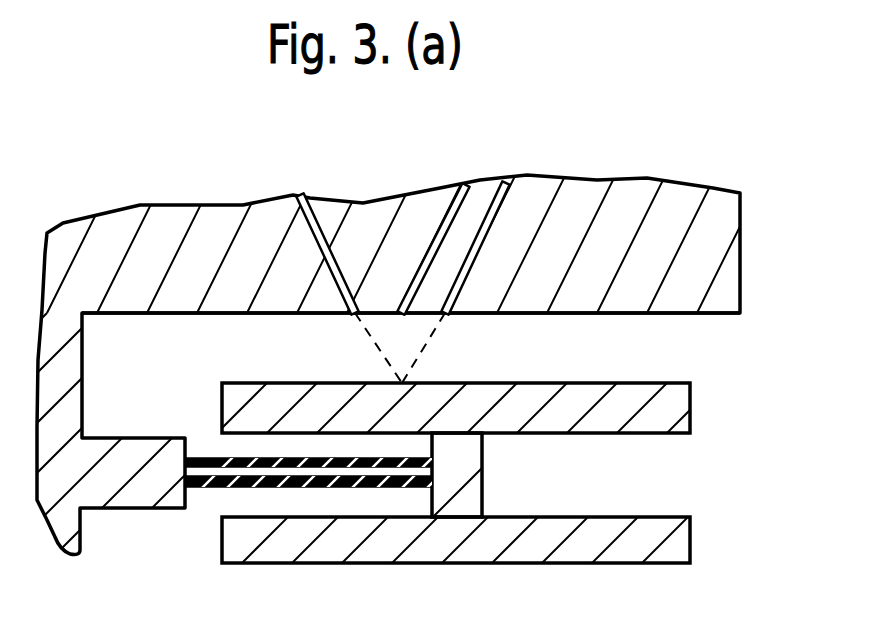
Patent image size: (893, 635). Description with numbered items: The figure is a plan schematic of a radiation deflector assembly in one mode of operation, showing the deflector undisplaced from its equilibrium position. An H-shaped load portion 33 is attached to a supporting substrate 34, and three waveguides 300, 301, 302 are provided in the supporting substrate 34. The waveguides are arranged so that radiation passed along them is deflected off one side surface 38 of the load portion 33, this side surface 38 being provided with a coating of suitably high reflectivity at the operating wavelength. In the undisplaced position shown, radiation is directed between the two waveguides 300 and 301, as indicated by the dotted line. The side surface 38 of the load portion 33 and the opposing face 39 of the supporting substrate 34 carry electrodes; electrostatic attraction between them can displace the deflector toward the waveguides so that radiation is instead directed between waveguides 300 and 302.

The supporting substrate 34 is at (703, 267).
The face of the supporting substrate 39 is at (548, 315).
The side surface of the load portion 38 is at (608, 382).
The H-shaped load portion 33 is at (660, 540).
The waveguide 300 is at (310, 187).
The waveguide 301 is at (500, 197).
The waveguide 302 is at (447, 207).